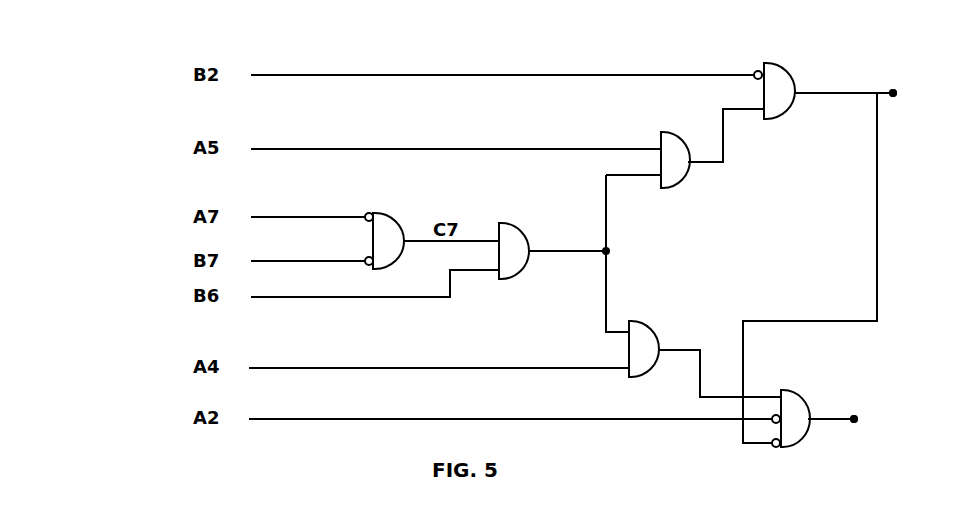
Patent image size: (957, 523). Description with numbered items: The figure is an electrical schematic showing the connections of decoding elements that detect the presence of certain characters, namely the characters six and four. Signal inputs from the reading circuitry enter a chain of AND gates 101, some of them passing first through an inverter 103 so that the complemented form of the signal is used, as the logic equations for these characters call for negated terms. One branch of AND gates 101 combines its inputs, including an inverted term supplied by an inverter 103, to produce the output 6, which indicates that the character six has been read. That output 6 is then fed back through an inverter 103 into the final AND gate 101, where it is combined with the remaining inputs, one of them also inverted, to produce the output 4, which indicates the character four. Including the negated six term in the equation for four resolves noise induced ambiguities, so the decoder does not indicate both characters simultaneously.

The AND gates 101 is at (388, 213).
The inverter 103 is at (365, 214).
The character 6 decoder output 6 is at (903, 91).
The character 4 decoder output 4 is at (862, 418).